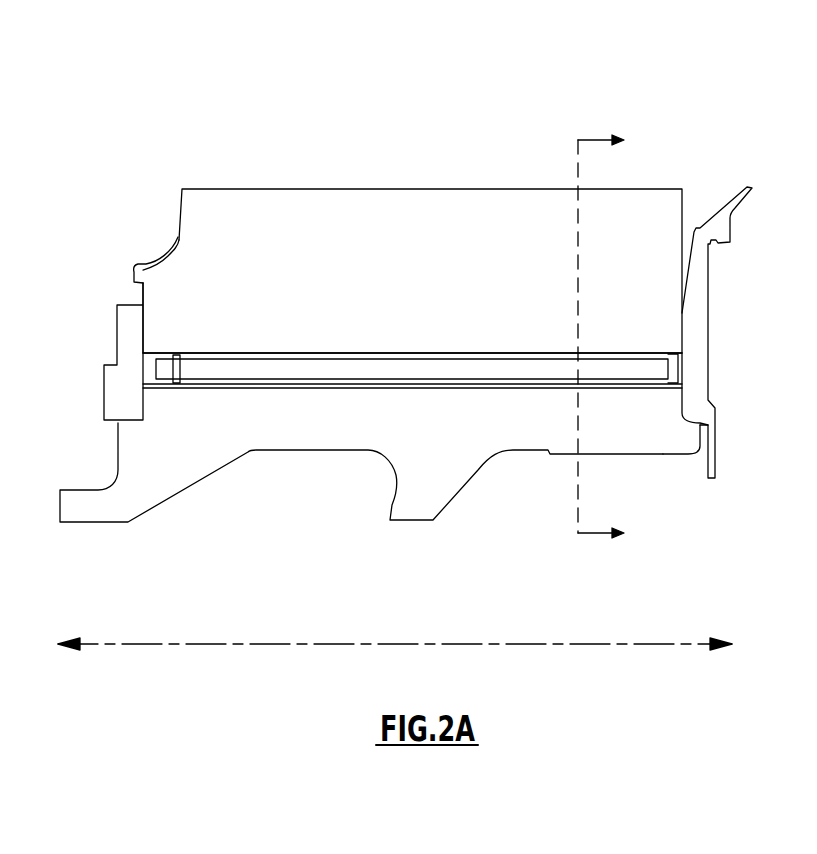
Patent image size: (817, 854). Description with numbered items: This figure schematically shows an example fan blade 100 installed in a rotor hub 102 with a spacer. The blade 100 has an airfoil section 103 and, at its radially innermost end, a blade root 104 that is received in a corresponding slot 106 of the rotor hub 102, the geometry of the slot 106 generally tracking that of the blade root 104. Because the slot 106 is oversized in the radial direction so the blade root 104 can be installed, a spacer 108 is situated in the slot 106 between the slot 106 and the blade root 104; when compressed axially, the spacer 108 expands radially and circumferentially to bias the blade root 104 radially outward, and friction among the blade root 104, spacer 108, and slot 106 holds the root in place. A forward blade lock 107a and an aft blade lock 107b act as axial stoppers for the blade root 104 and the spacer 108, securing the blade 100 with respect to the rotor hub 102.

The blade 100 is at (562, 112).
The rotor hub 102 is at (265, 423).
The airfoil section 103 is at (233, 213).
The blade root 104 is at (178, 287).
The slot 106 is at (342, 398).
The forward blade lock 107a is at (104, 368).
The aft blade lock 107b is at (697, 395).
The spacer 108 is at (518, 347).